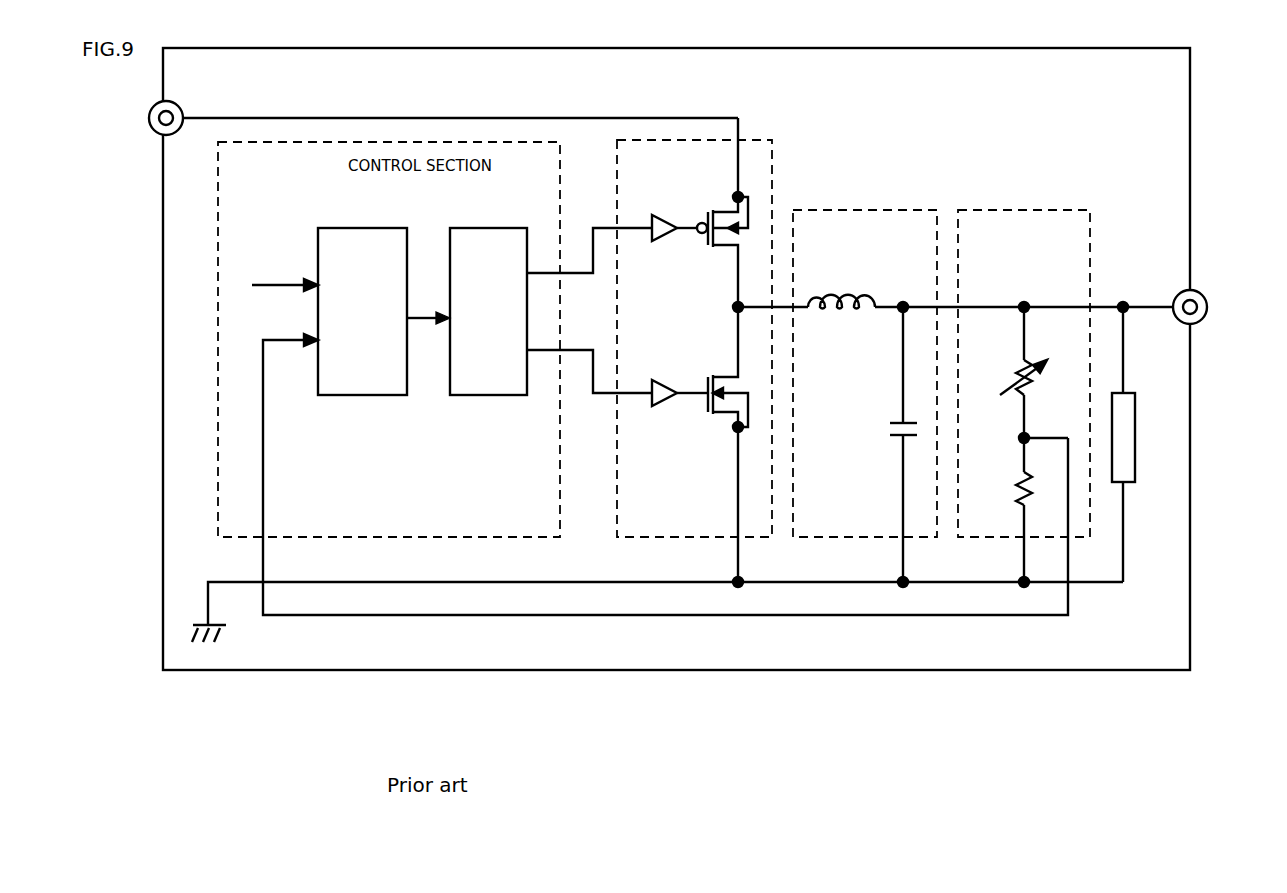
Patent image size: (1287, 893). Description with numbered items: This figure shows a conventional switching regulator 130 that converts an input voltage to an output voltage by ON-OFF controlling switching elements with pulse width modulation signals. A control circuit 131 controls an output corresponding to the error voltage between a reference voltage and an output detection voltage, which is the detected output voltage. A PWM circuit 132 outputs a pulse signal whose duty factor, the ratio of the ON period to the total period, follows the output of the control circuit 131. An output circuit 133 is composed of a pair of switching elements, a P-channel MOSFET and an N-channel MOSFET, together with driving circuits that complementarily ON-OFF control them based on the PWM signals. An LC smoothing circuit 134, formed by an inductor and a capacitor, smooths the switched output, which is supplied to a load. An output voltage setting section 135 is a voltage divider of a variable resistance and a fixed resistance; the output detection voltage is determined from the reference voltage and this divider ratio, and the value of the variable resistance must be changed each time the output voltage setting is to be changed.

The switching regulator 130 is at (158, 672).
The control circuit 131 is at (357, 396).
The PWM circuit 132 is at (478, 396).
The output circuit 133 is at (772, 140).
The LC smoothing circuit 134 is at (875, 210).
The output voltage setting section 135 is at (1022, 210).